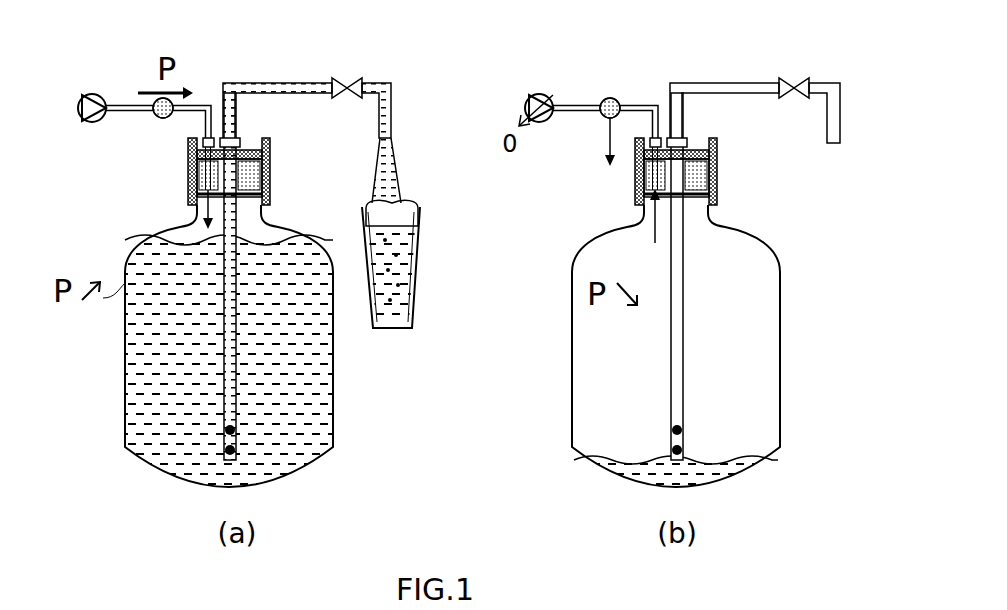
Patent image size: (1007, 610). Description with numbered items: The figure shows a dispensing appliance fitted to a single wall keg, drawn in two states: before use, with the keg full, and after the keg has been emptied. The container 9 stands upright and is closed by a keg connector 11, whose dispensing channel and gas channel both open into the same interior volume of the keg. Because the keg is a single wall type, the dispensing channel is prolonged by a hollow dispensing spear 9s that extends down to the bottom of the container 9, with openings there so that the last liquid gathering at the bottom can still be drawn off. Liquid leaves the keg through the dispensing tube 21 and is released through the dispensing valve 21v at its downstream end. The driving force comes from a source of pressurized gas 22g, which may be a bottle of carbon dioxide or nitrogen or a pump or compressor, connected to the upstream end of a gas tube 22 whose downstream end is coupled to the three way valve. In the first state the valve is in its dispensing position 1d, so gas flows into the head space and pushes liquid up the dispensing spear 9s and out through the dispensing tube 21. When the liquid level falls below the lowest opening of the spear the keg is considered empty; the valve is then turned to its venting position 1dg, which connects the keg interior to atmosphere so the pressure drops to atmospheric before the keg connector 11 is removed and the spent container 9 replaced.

The container 9 is at (333, 398).
The dispensing spear 9s is at (238, 338).
The keg connector 11 is at (270, 157).
The dispensing tube 21 is at (238, 80).
The dispensing valve 21v is at (338, 78).
The gas tube 22 is at (121, 102).
The source of pressurized gas 22g is at (90, 123).
The dispensing position of three way valve 1d is at (157, 117).
The venting position of three way valve 1dg is at (586, 139).